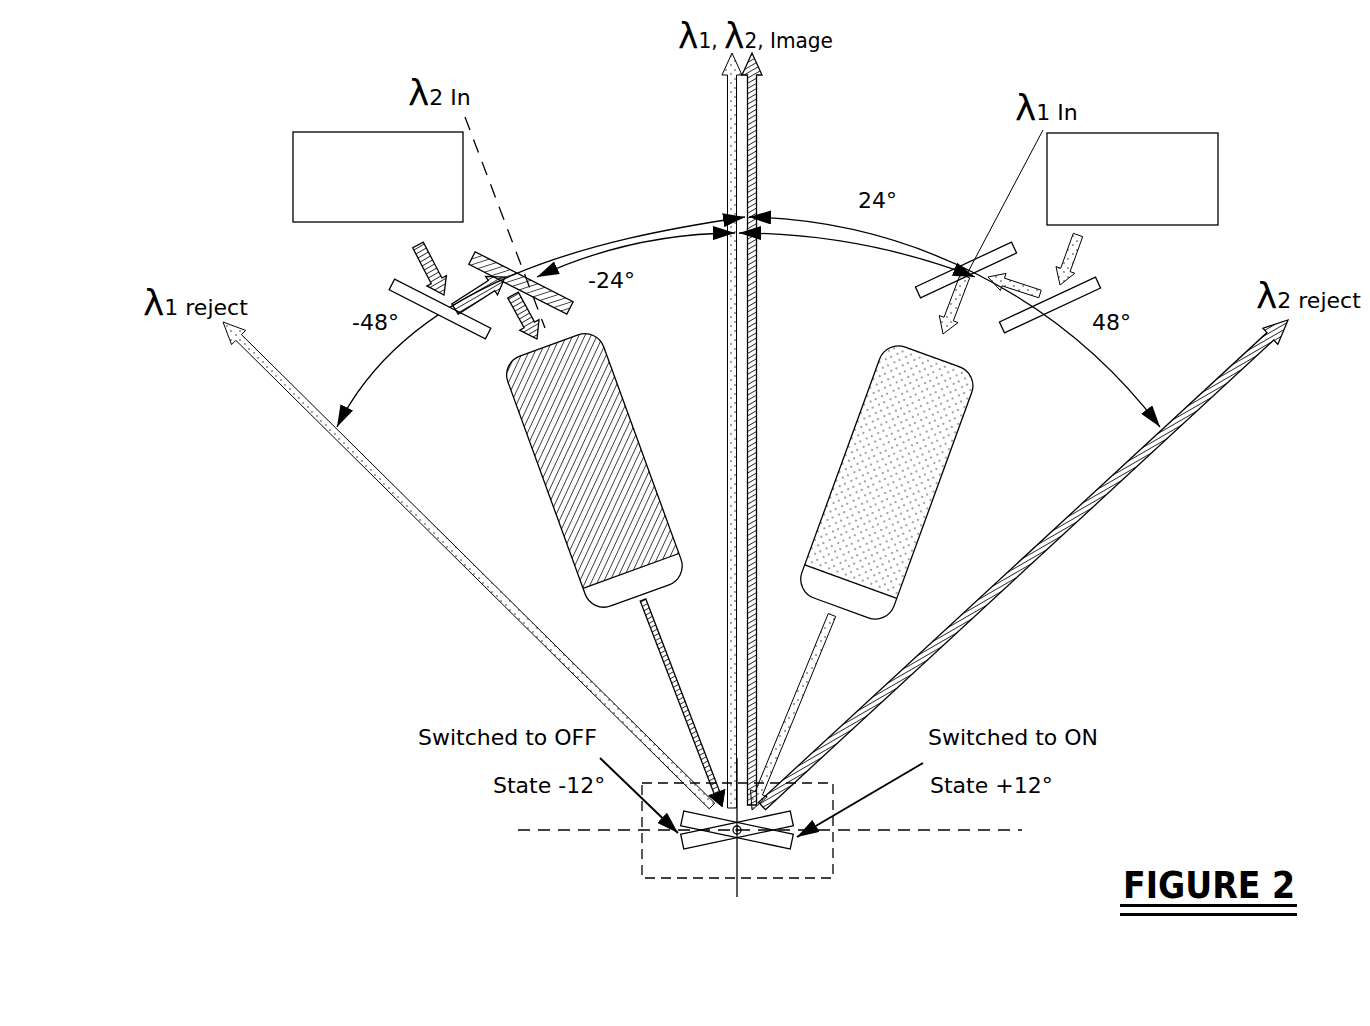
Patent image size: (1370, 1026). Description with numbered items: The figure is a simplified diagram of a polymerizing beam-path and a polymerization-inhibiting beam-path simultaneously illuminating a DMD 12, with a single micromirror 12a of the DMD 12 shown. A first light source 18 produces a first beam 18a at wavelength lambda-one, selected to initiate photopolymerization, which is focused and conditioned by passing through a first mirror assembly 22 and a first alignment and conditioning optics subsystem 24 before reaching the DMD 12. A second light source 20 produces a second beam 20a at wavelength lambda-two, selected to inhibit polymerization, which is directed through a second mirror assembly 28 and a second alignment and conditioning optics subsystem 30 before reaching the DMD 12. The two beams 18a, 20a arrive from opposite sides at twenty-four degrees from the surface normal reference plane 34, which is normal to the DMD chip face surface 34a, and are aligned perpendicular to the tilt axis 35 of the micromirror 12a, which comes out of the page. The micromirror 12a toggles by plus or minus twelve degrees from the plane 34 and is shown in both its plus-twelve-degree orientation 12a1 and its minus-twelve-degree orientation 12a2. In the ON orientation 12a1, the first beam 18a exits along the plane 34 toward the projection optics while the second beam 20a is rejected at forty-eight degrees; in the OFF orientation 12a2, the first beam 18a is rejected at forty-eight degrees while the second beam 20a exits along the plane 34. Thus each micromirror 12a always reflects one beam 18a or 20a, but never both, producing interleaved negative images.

The DMD 12 is at (640, 858).
The micromirror 12a is at (800, 835).
The +12° orientation 12a1 is at (790, 842).
The −12° orientation 12a2 is at (788, 820).
The first light source 18 is at (1117, 215).
The first optical beam 18a is at (727, 348).
The second light source 20 is at (363, 213).
The second optical beam 20a is at (416, 255).
The first mirror assembly 22 is at (1017, 335).
The first alignment and conditioning optics subsystem 24 is at (930, 452).
The second mirror assembly 28 is at (537, 240).
The second alignment and conditioning optics subsystem 30 is at (540, 442).
The surface normal reference plane 34 is at (740, 897).
The DMD chip face surface 34a is at (962, 835).
The tilt axis 35 is at (758, 832).